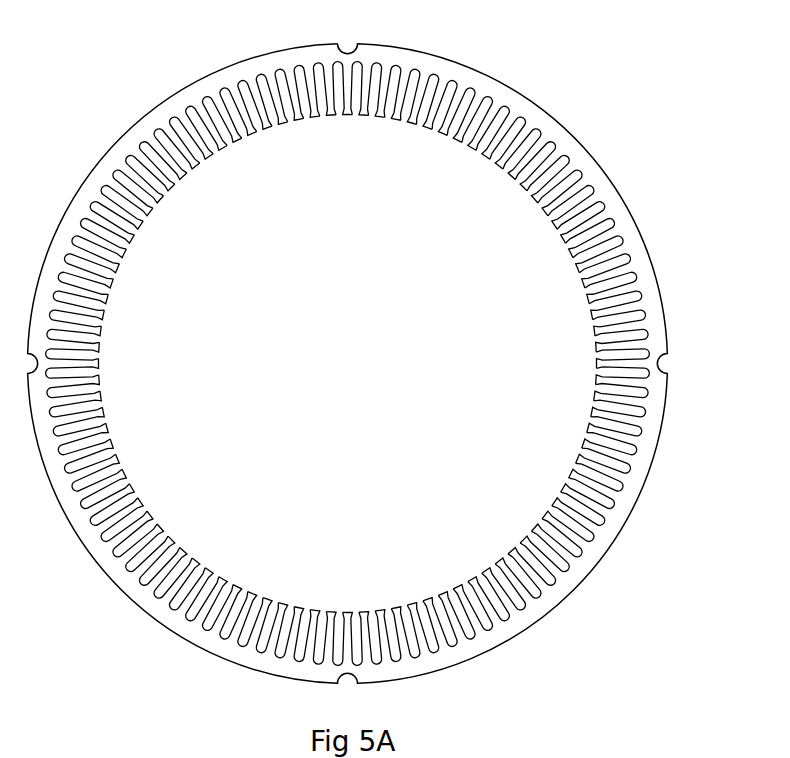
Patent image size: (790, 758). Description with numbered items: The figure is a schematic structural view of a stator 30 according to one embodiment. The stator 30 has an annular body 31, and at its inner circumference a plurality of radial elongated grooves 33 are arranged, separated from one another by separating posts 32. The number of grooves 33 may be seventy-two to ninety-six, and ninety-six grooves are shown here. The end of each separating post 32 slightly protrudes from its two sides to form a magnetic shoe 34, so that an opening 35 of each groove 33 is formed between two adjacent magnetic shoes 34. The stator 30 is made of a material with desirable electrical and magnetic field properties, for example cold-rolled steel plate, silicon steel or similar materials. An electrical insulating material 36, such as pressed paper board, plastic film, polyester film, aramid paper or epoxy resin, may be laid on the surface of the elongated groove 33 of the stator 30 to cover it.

The stator 30 is at (623, 133).
The annular body 31 is at (648, 277).
The separating post 32 is at (610, 207).
The radial elongated groove 33 is at (558, 236).
The magnetic shoe 34 is at (510, 189).
The opening 35 is at (470, 156).
The electrical insulating material 36 is at (410, 128).